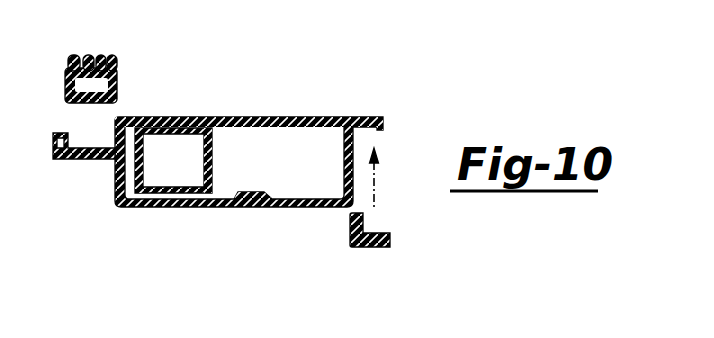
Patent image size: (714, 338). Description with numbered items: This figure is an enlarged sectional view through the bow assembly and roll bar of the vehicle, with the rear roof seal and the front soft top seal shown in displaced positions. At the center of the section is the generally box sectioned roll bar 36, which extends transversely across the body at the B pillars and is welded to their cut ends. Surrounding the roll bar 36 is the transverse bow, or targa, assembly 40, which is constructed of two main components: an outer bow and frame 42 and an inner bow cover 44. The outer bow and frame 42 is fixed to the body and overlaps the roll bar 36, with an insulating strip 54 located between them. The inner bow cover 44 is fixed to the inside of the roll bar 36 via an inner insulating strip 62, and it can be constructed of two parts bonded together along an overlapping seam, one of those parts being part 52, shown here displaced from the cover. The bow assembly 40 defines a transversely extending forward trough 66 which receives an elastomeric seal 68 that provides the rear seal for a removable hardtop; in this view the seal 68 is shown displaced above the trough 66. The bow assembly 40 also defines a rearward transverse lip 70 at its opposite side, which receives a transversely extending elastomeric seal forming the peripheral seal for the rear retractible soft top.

The bow assembly 40 is at (285, 149).
The outer bow and frame 42 is at (343, 118).
The rearward transverse lip 70 is at (380, 110).
The inner bow cover 44 is at (278, 208).
The inner insulating strip 62 is at (219, 124).
The insulating strip 54 is at (150, 135).
The roll bar 36 is at (208, 146).
The forward trough 66 is at (78, 148).
The elastomeric seal 68 is at (68, 70).
The inner bow cover part 52 is at (390, 238).